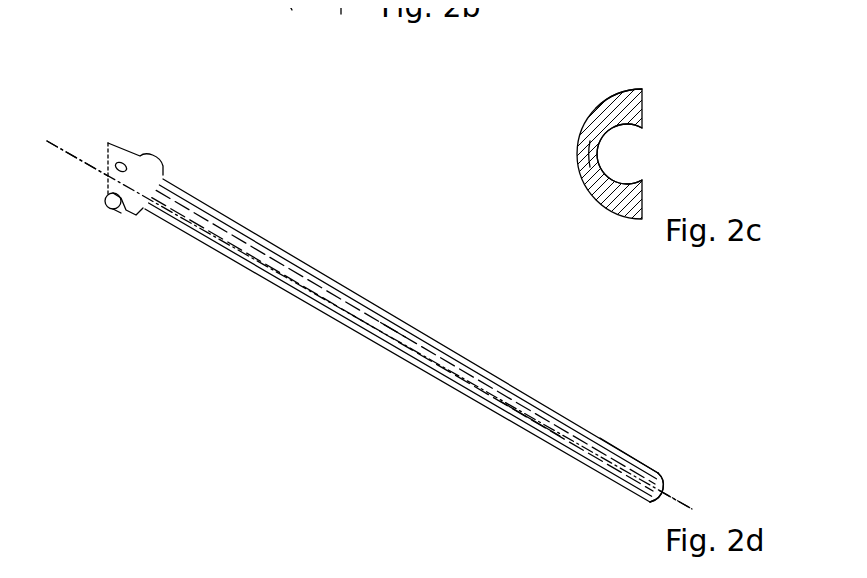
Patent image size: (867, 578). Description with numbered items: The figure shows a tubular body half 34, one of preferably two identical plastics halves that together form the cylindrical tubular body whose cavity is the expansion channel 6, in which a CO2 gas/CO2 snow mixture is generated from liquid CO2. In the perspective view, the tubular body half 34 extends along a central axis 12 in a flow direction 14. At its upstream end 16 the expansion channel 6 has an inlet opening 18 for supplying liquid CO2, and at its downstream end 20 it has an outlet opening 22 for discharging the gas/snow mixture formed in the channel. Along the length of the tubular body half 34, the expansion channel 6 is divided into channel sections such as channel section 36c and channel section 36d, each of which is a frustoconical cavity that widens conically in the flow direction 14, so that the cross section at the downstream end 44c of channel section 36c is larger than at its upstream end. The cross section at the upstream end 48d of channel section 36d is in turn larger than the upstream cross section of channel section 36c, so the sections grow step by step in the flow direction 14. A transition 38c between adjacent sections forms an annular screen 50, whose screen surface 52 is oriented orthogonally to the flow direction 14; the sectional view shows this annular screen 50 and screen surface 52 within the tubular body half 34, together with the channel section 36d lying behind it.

In FIG. 2d, the expansion channel 6 is at (613, 458).
In FIG. 2d, the central axis 12 is at (72, 155).
In FIG. 2d, the flow direction 14 is at (372, 232).
In FIG. 2d, the upstream end 16 is at (79, 141).
In FIG. 2d, the inlet opening 18 is at (108, 170).
In FIG. 2d, the downstream end 20 is at (688, 487).
In FIG. 2d, the outlet opening 22 is at (663, 480).
In FIG. 2c, the tubular body half 34 is at (621, 66).
In FIG. 2d, the tubular body half 34 is at (258, 150).
In FIG. 2d, the channel section 36c is at (425, 363).
In FIG. 2c, the channel section 36d is at (619, 161).
In FIG. 2d, the channel section 36d is at (520, 412).
In FIG. 2d, the transition 38c is at (471, 398).
In FIG. 2d, the downstream end 44c is at (477, 368).
In FIG. 2d, the upstream end 48d is at (476, 376).
In FIG. 2c, the annular screen 50 is at (601, 153).
In FIG. 2c, the screen surface 52 is at (631, 121).